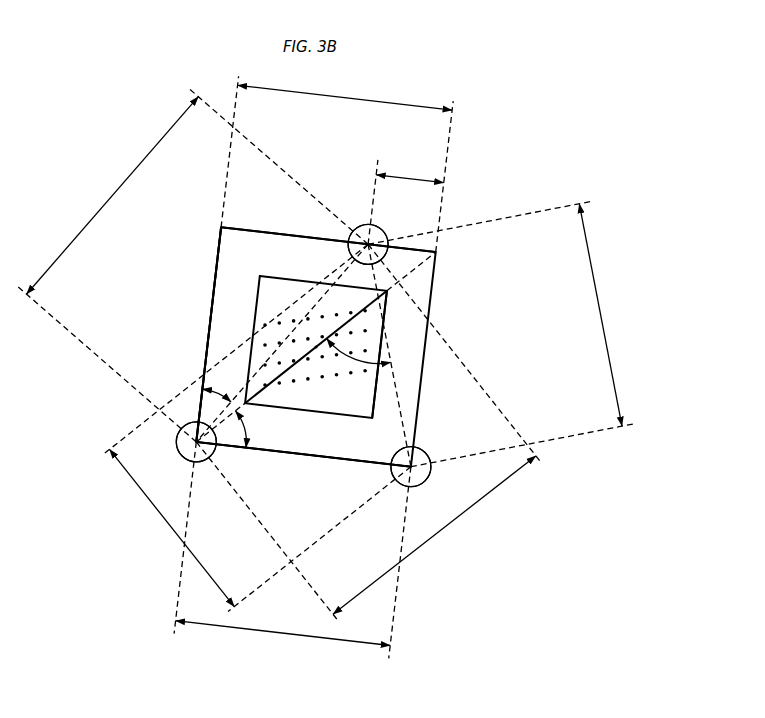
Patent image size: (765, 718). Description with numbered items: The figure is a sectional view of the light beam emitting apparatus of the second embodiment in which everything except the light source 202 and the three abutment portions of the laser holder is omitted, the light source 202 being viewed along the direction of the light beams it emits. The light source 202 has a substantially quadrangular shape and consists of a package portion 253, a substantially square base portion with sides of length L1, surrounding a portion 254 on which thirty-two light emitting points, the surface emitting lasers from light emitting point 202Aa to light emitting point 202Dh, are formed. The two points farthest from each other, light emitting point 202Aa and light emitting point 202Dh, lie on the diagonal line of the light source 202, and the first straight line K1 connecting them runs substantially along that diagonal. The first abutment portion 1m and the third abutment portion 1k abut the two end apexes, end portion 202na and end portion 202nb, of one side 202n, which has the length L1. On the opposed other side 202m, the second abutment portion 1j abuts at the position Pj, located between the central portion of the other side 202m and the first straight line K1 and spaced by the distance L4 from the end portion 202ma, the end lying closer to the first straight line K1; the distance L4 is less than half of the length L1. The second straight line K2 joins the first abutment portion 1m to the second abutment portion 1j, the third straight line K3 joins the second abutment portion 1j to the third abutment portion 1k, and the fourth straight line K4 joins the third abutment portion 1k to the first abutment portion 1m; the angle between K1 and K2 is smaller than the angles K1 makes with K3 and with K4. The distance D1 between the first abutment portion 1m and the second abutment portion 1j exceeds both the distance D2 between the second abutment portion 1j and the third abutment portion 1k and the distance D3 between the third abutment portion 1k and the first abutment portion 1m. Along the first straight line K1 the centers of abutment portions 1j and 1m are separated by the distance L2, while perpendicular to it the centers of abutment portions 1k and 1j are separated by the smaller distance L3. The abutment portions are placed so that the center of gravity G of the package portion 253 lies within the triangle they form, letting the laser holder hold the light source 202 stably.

The light source 202 is at (431, 309).
The other side 202m is at (268, 232).
The end portion of the other side 202ma is at (436, 253).
The one side 202n is at (317, 456).
The end portion of the one side 202na is at (178, 455).
The end portion of the one side 202nb is at (429, 478).
The light emitting point 202Aa is at (283, 408).
The light emitting point 202Dh is at (385, 314).
The package portion 253 is at (223, 330).
The portion with light emitting points 254 is at (237, 290).
The center of gravity G is at (318, 342).
The position Pj is at (384, 231).
The second abutment portion 1j is at (360, 224).
The first abutment portion 1m is at (183, 426).
The third abutment portion 1k is at (398, 482).
The first straight line K1 is at (410, 274).
The second straight line K2 is at (295, 320).
The third straight line K3 is at (402, 427).
The fourth straight line K4 is at (355, 460).
The length L1 is at (337, 161).
The distance L2 is at (369, 433).
The distance L3 is at (257, 427).
The distance L4 is at (406, 198).
The distance D1 is at (193, 265).
The distance D2 is at (501, 333).
The distance D3 is at (292, 550).